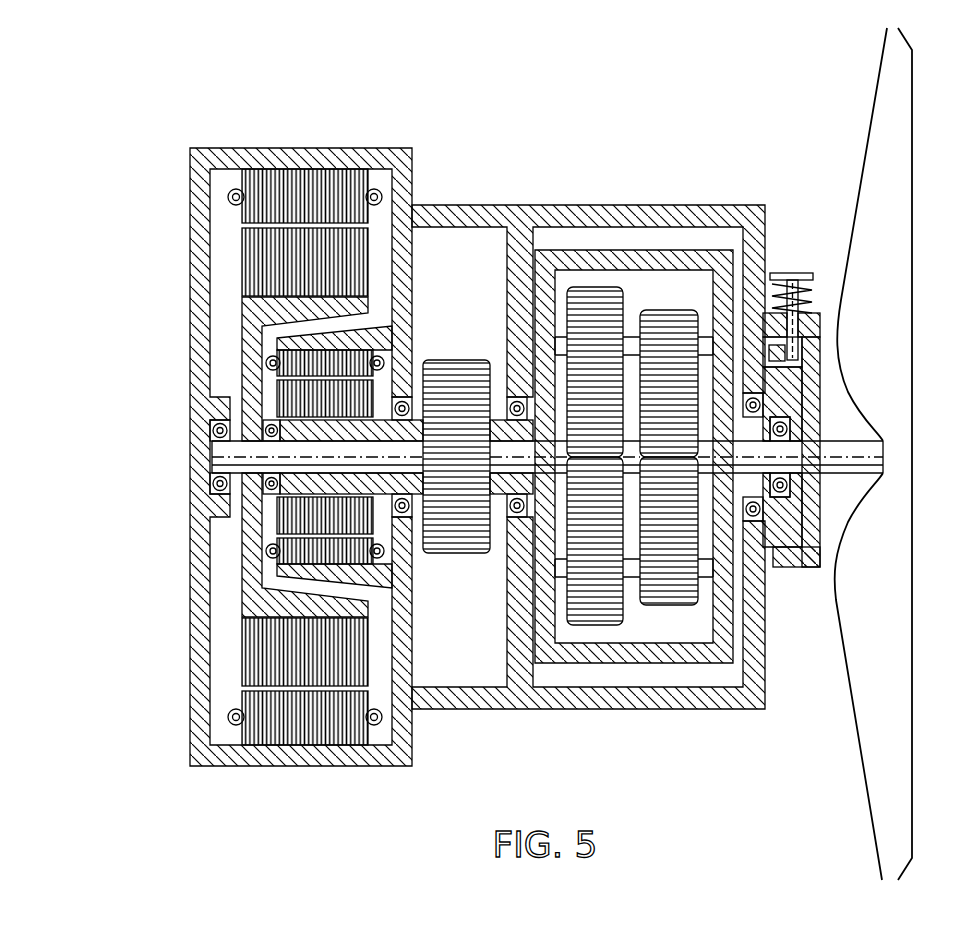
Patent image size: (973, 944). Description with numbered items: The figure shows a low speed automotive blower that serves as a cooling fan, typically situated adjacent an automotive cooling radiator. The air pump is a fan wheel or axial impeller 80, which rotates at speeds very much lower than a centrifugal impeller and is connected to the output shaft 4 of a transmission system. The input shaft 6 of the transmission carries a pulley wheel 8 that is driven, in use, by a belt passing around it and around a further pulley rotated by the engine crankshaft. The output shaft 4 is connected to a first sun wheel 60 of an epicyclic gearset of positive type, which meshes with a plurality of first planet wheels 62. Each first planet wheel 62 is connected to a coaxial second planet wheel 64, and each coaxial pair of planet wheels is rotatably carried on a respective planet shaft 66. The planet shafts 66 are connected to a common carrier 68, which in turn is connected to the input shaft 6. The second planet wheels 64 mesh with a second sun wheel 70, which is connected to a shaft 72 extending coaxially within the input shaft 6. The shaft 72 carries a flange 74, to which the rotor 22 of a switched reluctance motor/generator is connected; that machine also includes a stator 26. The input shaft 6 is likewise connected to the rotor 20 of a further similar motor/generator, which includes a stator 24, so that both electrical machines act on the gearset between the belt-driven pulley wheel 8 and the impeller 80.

The output shaft 4 is at (837, 477).
The input shaft 6 is at (500, 420).
The pulley wheel 8 is at (455, 358).
The rotor 20 is at (280, 519).
The rotor 22 is at (243, 269).
The stator 24 is at (275, 550).
The stator 26 is at (243, 211).
The first sun wheel 60 is at (662, 445).
The first planet wheel 62 is at (655, 592).
The second planet wheel 64 is at (607, 597).
The planet shaft 66 is at (708, 583).
The common carrier 68 is at (550, 655).
The second sun wheel 70 is at (592, 445).
The shaft 72 is at (415, 440).
The flange 74 is at (243, 319).
The axial impeller 80 is at (913, 190).